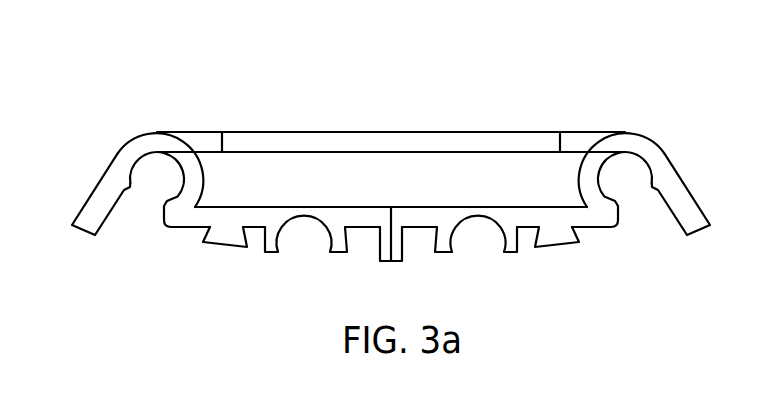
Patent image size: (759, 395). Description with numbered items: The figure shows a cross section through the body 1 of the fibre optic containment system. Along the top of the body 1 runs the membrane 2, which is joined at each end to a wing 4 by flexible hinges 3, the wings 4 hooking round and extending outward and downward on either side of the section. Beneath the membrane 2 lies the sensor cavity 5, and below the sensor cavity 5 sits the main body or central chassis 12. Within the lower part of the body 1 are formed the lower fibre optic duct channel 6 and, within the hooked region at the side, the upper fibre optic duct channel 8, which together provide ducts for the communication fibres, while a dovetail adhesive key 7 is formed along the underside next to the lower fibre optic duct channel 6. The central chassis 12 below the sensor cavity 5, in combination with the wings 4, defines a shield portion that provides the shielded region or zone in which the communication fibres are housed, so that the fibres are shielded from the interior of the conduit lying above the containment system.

The body 1 is at (103, 116).
The membrane 2 is at (385, 131).
The flexible hinges 3 is at (211, 131).
The wings 4 is at (88, 208).
The sensor cavity 5 is at (270, 182).
The lower fibre optic duct channel 6 is at (472, 242).
The dovetail adhesive key 7 is at (572, 243).
The upper fibre optic duct channel 8 is at (623, 178).
The central chassis 12 is at (353, 218).